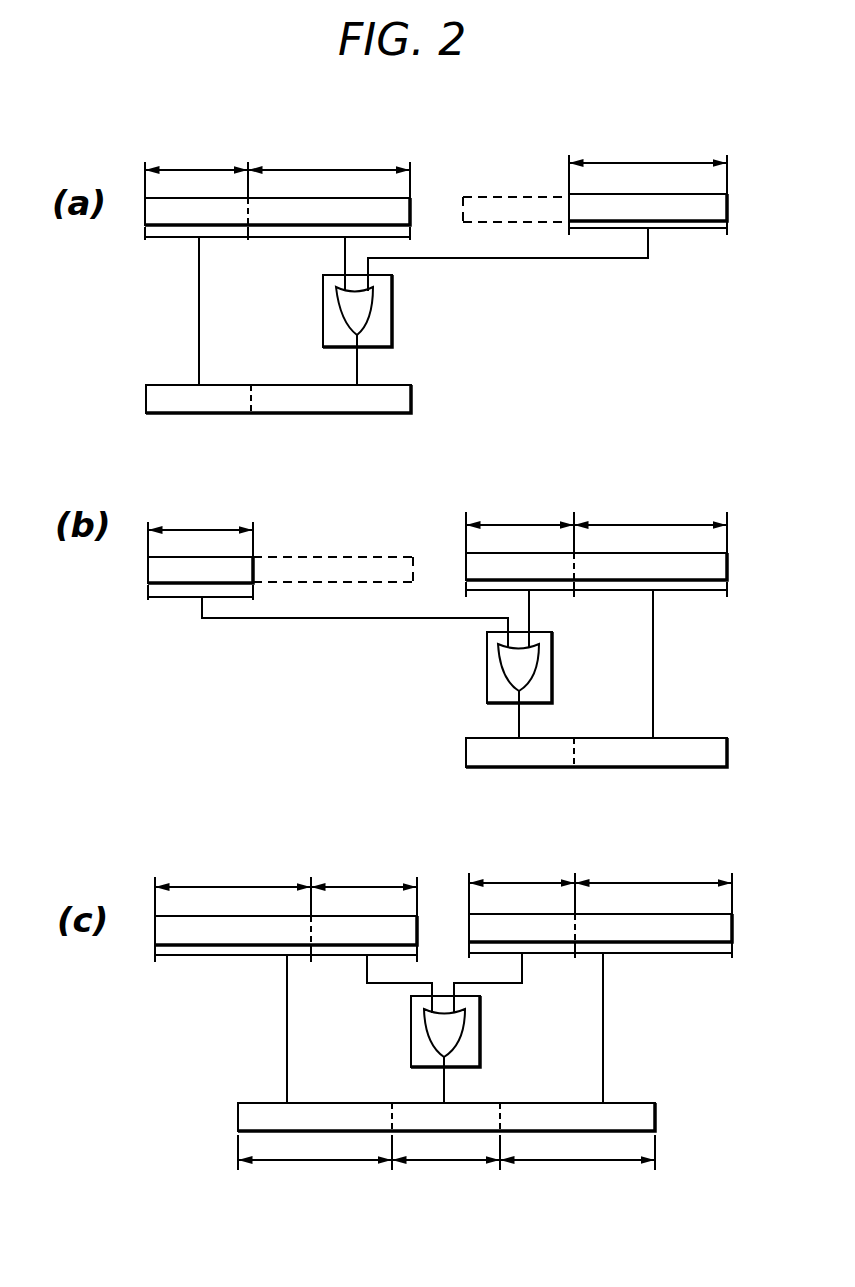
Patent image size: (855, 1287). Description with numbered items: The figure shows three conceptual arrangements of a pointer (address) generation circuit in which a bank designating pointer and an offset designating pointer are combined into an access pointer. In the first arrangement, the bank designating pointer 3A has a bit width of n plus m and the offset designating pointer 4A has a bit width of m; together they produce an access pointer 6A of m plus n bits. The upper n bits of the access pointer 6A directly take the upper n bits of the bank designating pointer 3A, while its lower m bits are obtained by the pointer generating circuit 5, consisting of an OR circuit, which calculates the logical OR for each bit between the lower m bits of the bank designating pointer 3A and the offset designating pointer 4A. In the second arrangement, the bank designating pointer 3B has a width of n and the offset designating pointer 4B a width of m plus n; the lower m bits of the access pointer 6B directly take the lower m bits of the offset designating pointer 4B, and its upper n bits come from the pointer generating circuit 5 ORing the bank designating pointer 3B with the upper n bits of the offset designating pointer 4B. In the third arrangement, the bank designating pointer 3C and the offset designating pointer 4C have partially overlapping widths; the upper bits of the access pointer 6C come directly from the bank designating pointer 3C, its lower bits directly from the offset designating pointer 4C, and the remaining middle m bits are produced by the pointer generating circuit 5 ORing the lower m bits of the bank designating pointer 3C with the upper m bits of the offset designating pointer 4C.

The bank designating pointer 3A is at (413, 207).
The offset designating pointer 4A is at (728, 205).
The pointer generating circuit 5 is at (393, 313).
The access pointer 6A is at (413, 397).
The bank designating pointer 3B is at (147, 575).
The offset designating pointer 4B is at (728, 567).
The access pointer 6B is at (728, 748).
The bank designating pointer 3C is at (418, 930).
The offset designating pointer 4C is at (733, 928).
The access pointer 6C is at (656, 1110).